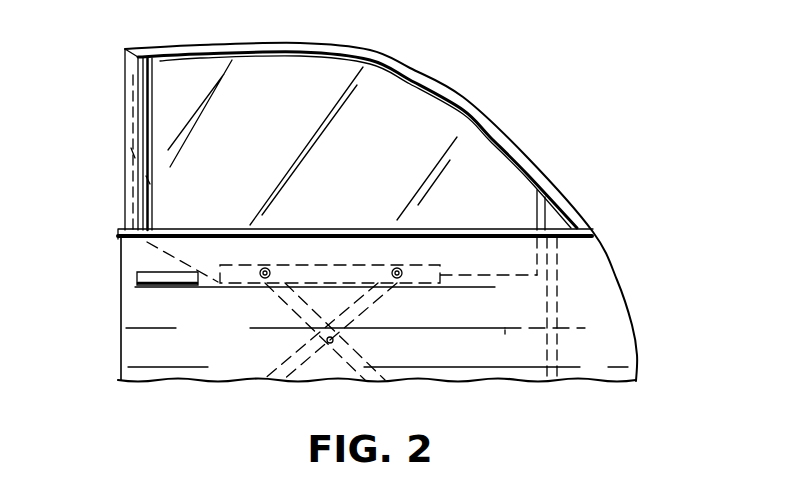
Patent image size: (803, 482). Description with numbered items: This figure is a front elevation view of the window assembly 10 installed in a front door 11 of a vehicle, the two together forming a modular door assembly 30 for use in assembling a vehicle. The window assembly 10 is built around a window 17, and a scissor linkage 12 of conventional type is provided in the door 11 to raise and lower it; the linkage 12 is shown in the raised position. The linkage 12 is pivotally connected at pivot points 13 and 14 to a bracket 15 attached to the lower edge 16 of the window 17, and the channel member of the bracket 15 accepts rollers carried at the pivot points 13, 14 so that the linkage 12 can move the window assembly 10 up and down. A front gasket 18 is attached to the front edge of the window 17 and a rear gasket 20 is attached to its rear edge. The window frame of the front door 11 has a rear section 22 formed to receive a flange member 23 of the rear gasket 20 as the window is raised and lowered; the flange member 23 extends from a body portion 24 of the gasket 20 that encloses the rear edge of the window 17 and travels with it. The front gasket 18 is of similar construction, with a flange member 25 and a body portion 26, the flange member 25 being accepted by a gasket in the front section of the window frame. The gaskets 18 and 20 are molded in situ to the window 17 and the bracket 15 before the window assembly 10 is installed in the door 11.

The window assembly 10 is at (340, 80).
The front door 11 is at (124, 80).
The scissor linkage 12 is at (323, 366).
The pivot point 13 is at (399, 287).
The pivot point 14 is at (262, 285).
The bracket 15 is at (320, 288).
The lower edge 16 is at (512, 277).
The window 17 is at (503, 150).
The front gasket 18 is at (533, 219).
The rear gasket 20 is at (150, 128).
The rear section 22 is at (130, 117).
The flange member 23 is at (133, 153).
The body portion 24 is at (150, 180).
The flange member 25 is at (550, 250).
The body portion 26 is at (538, 200).
The modular door assembly 30 is at (492, 82).